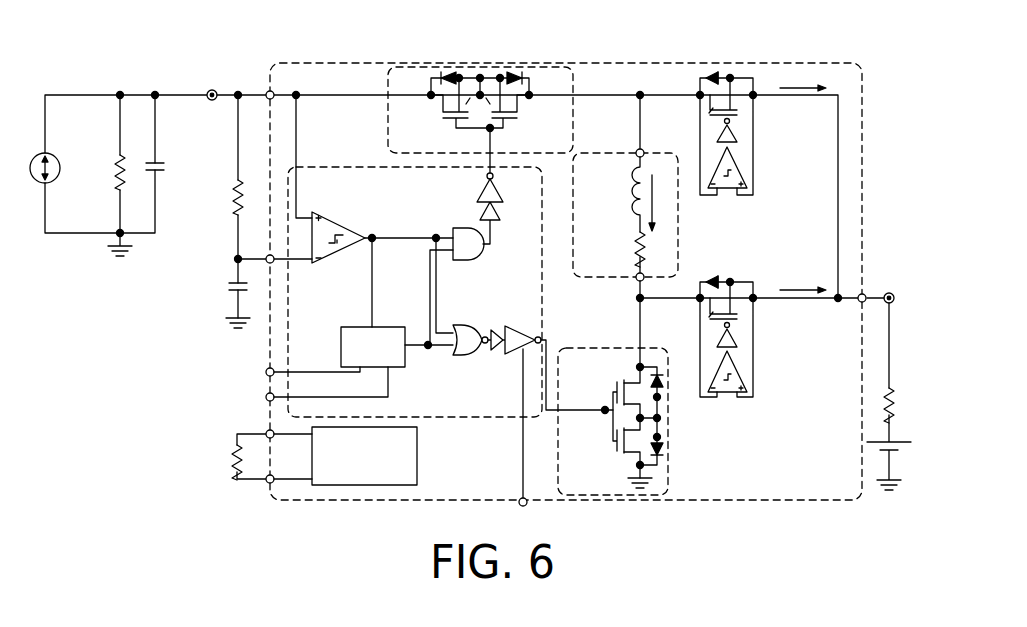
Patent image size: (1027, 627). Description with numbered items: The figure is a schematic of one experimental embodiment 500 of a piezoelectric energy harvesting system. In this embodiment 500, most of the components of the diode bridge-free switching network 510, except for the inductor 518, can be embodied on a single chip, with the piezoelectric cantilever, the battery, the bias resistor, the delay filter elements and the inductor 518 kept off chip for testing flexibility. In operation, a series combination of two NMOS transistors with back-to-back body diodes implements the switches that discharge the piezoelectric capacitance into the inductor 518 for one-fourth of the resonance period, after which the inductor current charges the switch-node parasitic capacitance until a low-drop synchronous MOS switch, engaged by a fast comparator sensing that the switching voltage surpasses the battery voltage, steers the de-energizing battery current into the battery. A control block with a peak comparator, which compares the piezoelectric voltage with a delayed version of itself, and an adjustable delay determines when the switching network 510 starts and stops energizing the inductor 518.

The experimental embodiment 500 is at (598, 54).
The diode bridge-free switching network 510 is at (339, 63).
The inductor 518 is at (628, 153).